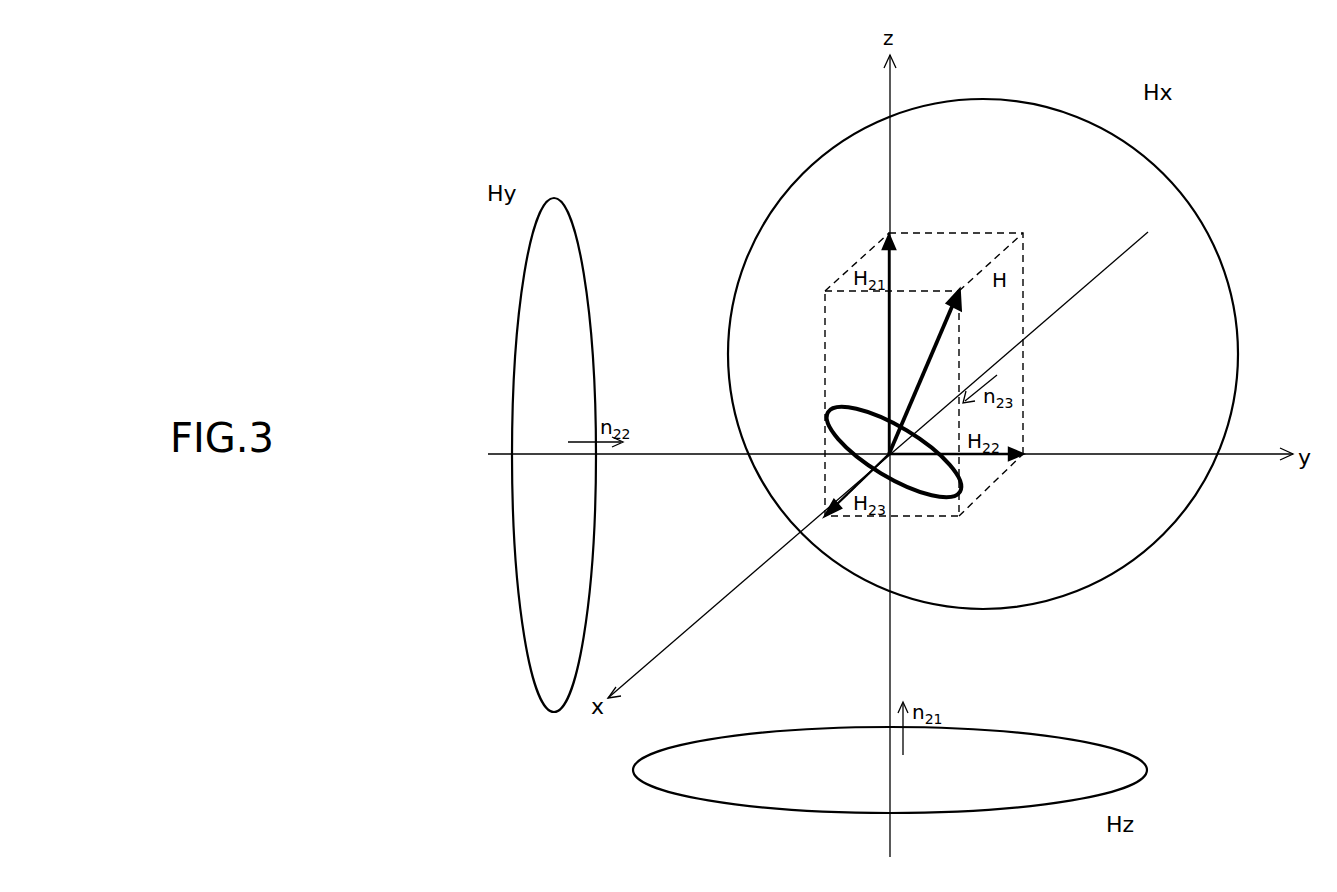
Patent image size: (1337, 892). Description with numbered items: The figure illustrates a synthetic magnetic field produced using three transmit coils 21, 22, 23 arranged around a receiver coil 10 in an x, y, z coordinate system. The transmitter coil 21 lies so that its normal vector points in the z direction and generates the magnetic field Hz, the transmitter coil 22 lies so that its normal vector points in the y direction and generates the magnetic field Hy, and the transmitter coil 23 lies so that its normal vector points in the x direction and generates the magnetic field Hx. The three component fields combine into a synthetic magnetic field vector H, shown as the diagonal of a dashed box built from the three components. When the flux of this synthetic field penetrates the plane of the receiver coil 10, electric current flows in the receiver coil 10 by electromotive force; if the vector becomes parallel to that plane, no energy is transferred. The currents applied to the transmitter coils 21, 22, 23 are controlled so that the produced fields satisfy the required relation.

The receiver coil 10 is at (915, 488).
The transmitter coil 21 is at (1138, 752).
The transmitter coil 22 is at (517, 295).
The transmitter coil 23 is at (997, 100).